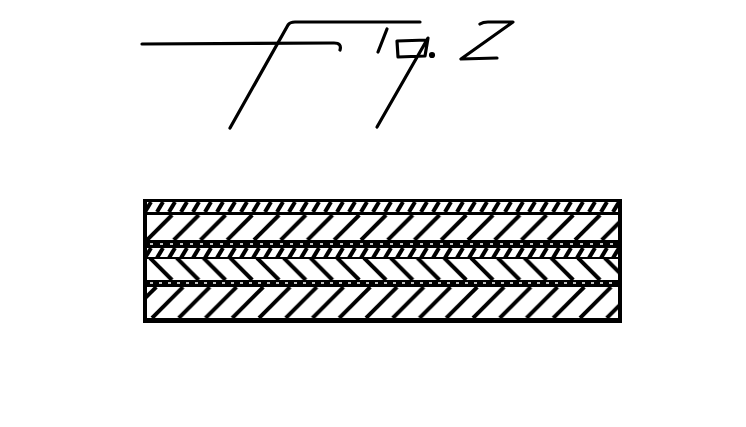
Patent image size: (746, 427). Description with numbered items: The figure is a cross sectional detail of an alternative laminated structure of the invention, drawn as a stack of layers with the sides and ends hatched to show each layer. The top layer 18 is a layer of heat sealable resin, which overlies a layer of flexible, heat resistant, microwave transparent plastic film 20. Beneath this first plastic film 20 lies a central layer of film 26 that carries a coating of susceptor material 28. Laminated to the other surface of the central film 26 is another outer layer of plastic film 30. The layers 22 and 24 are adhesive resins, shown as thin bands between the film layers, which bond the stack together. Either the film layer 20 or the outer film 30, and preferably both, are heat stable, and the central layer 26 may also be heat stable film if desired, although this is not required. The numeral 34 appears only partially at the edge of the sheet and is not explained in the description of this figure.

The top layer 18 is at (563, 199).
The plastic film layer 20 is at (621, 220).
The adhesive resin layer 22 is at (143, 241).
The adhesive resin layer 24 is at (143, 281).
The central film layer 26 is at (622, 270).
The susceptor material coating 28 is at (622, 245).
The outer plastic film layer 30 is at (622, 307).
The element 34 is at (745, 40).